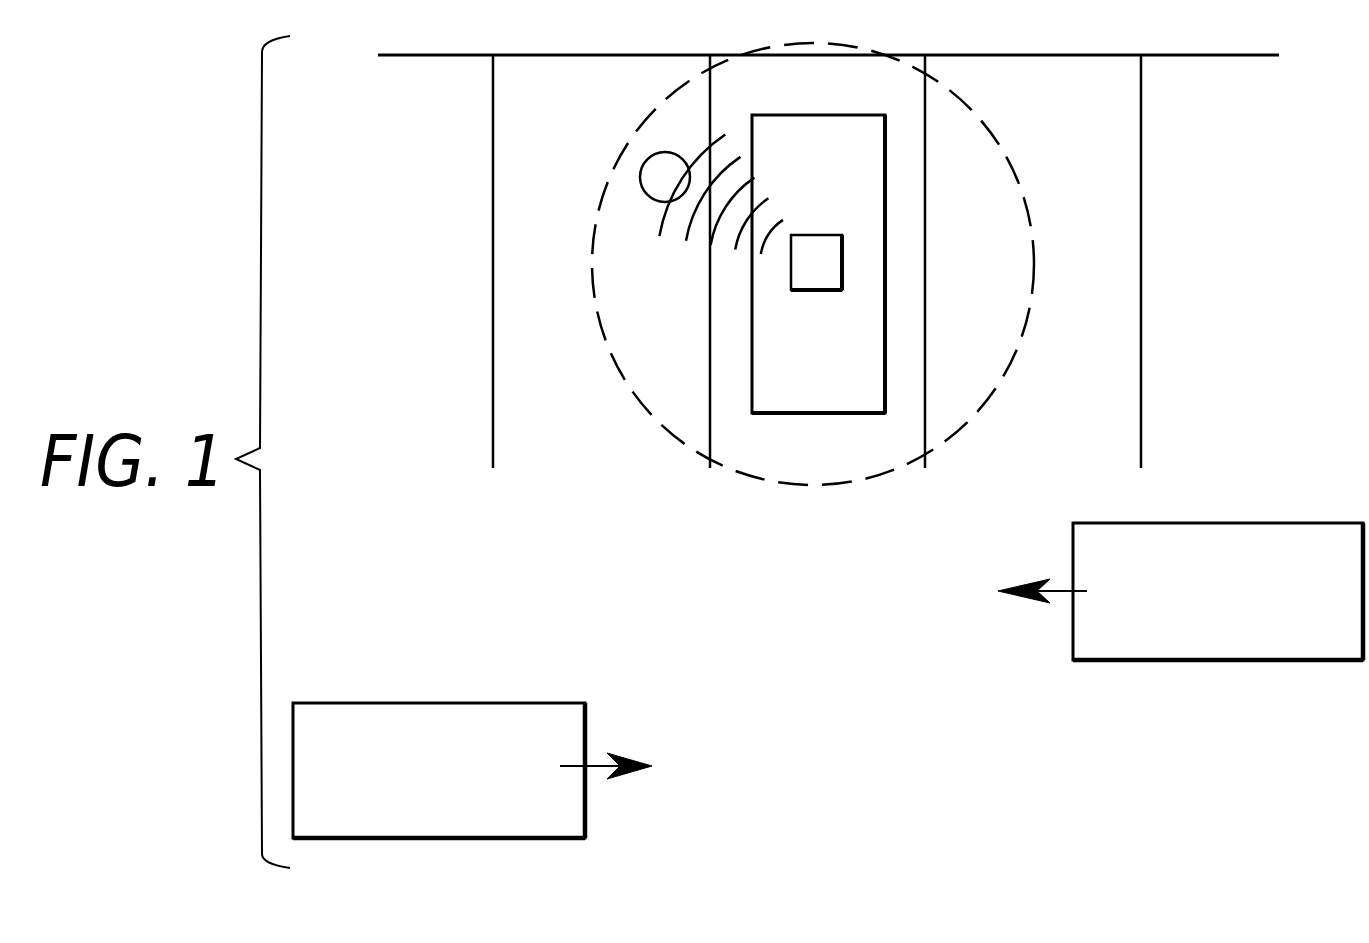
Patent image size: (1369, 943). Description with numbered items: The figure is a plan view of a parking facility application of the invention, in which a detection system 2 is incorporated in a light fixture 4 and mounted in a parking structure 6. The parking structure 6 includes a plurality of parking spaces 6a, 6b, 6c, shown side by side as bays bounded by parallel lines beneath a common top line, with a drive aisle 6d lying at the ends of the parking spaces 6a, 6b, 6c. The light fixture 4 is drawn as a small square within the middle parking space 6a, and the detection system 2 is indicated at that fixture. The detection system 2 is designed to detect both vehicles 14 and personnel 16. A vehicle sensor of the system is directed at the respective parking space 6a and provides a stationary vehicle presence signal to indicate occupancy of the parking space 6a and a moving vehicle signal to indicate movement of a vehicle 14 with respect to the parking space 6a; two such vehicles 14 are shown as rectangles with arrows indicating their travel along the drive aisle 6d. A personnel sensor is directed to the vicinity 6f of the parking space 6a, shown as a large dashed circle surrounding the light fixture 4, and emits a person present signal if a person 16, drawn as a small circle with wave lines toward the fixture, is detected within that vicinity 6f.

The detection system 2 is at (787, 296).
The light fixture 4 is at (842, 235).
The parking structure 6 is at (1038, 55).
The parking space 6a is at (824, 458).
The parking space 6b is at (562, 442).
The parking space 6c is at (1102, 449).
The drive aisle 6d is at (517, 595).
The vicinity of the parking space 6f is at (1027, 332).
The vehicle 14 is at (428, 782).
The personnel 16 is at (654, 153).